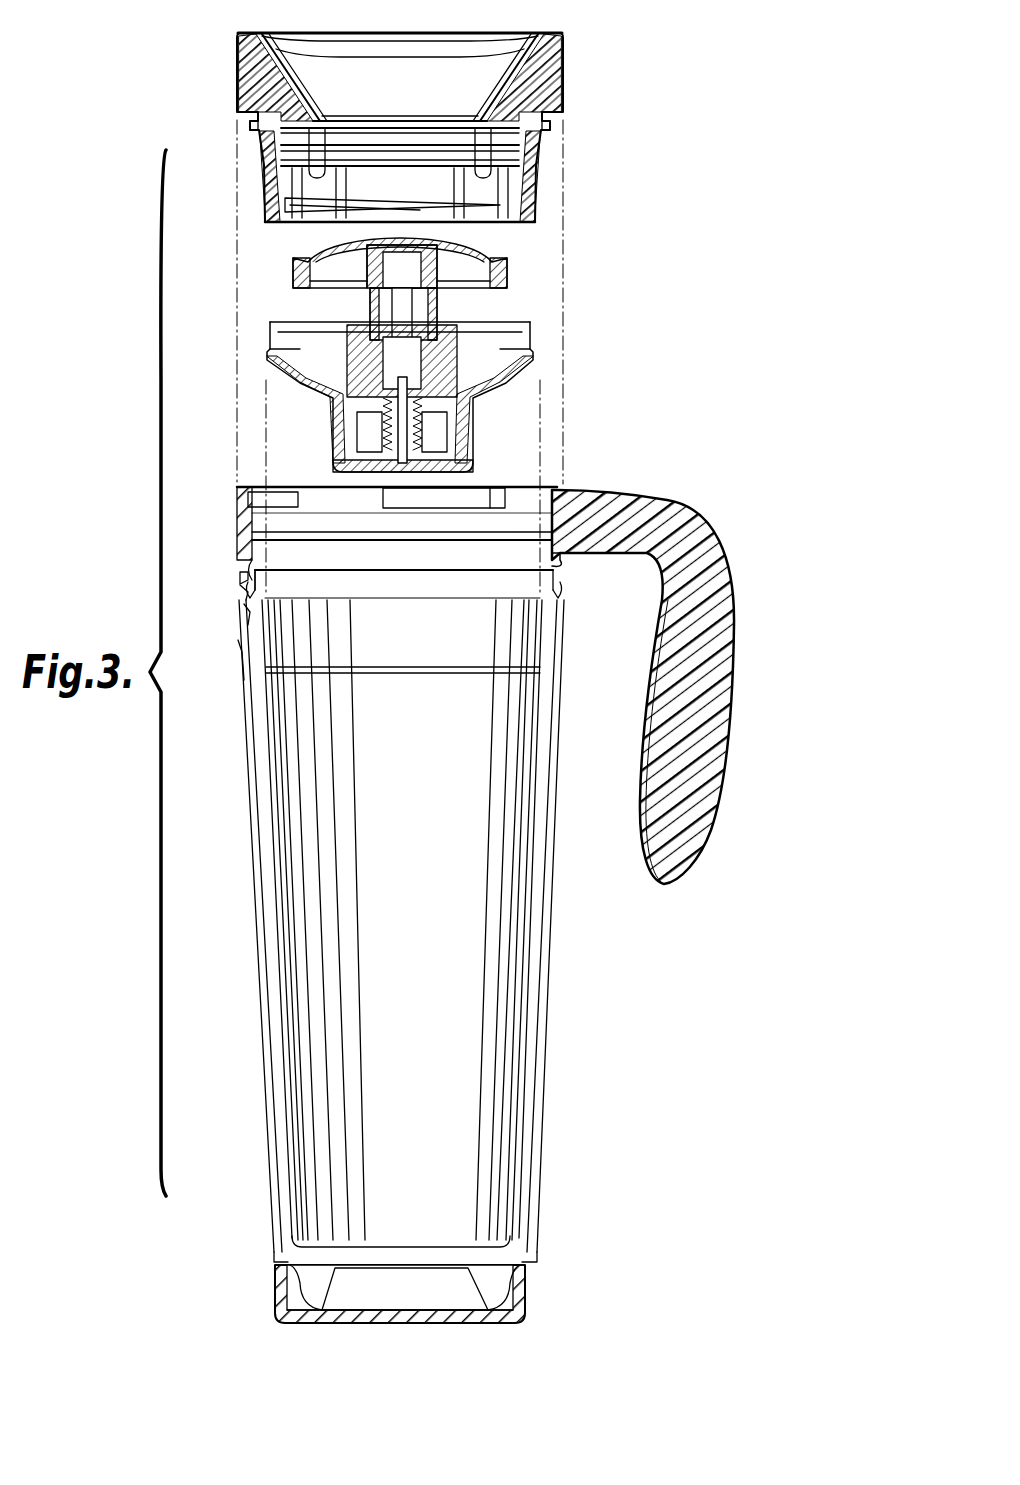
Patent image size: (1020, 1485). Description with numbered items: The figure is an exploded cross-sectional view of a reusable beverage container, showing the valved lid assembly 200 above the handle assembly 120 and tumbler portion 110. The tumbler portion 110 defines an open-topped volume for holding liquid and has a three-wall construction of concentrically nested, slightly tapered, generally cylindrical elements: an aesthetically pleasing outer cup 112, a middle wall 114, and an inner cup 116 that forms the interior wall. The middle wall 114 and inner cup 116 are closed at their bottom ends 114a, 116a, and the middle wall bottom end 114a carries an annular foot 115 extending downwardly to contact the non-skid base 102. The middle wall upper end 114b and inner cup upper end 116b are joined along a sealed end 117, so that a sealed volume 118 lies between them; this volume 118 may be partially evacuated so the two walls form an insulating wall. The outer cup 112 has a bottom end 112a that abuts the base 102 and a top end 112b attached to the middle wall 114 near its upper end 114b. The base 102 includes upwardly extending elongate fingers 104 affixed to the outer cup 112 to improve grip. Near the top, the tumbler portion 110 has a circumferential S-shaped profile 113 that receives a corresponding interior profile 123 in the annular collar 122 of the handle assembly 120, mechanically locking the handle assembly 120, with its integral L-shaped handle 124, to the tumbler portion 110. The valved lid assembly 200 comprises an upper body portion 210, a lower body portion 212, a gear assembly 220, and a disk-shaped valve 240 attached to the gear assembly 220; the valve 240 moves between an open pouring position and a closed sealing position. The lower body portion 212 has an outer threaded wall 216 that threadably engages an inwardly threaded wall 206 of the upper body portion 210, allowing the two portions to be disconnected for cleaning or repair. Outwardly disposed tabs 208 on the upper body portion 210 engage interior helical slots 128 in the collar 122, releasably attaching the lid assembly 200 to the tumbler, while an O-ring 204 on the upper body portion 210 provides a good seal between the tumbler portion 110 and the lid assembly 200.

The valved lid assembly 200 is at (650, 87).
The upper body portion 210 is at (572, 68).
The outwardly disposed tabs 208 is at (250, 126).
The O-ring 204 is at (560, 162).
The inwardly threaded wall 206 is at (288, 222).
The disk-shaped valve 240 is at (500, 248).
The gear assembly 220 is at (442, 302).
The outer threaded wall 216 is at (272, 326).
The lower body portion 212 is at (532, 356).
The interior helical slots 128 is at (262, 490).
The annular collar 122 is at (553, 482).
The handle assembly 120 is at (664, 672).
The L-shaped handle 124 is at (695, 528).
The interior profile 123 is at (566, 556).
The circumferential S-shaped profile 113 is at (560, 612).
The sealed end 117 is at (250, 575).
The middle wall upper end 114b is at (247, 592).
The inner cup upper end 116b is at (246, 615).
The outer cup top end 112b is at (242, 652).
The tumbler portion 110 is at (453, 932).
The outer cup 112 is at (565, 926).
The middle wall 114 is at (556, 973).
The inner cup 116 is at (532, 1013).
The sealed volume 118 is at (526, 1081).
The elongate fingers 104 is at (437, 926).
The non-skid base 102 is at (392, 1271).
The outer cup bottom end 112a is at (272, 1257).
The inner cup bottom end 116a is at (470, 1250).
The middle wall bottom end 114a is at (455, 1272).
The annular foot 115 is at (522, 1312).